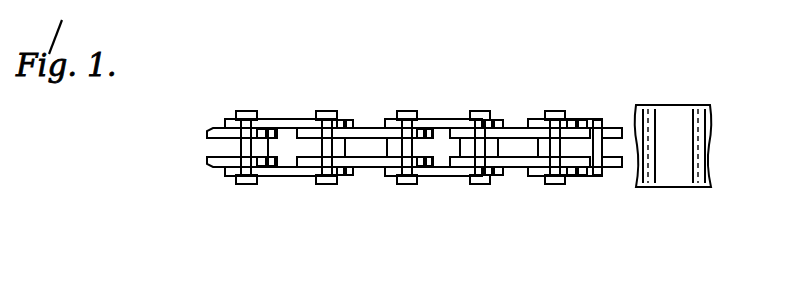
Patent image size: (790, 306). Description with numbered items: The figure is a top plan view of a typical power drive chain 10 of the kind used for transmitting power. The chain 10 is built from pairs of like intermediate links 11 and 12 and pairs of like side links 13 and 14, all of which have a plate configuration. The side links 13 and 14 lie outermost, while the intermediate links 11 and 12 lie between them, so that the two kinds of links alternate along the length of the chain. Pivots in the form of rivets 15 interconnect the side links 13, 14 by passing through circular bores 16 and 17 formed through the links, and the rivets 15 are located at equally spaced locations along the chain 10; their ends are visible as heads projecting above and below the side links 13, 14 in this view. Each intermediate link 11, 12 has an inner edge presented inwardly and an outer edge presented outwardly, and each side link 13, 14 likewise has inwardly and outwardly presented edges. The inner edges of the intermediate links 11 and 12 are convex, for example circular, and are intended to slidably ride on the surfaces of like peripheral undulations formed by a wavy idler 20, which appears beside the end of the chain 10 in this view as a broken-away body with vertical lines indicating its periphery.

The power drive chain 10 is at (533, 94).
The intermediate link 11 is at (367, 128).
The intermediate link 12 is at (363, 168).
The side link 13 is at (277, 119).
The side link 14 is at (280, 176).
The rivet 15 is at (413, 115).
The circular bore 16 is at (244, 184).
The circular bore 17 is at (247, 110).
The wavy idler 20 is at (665, 160).